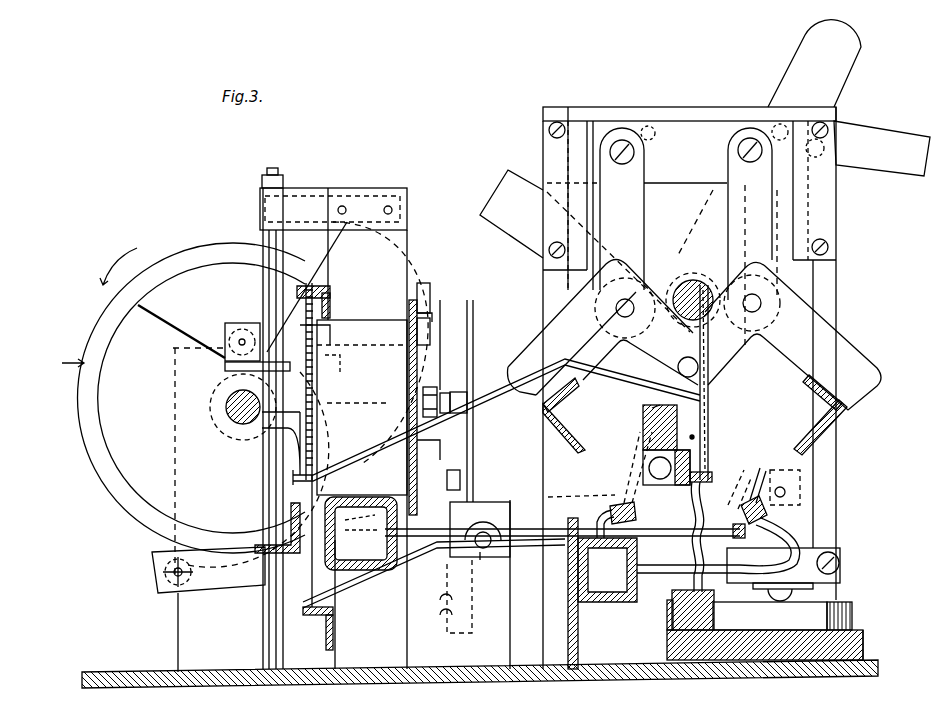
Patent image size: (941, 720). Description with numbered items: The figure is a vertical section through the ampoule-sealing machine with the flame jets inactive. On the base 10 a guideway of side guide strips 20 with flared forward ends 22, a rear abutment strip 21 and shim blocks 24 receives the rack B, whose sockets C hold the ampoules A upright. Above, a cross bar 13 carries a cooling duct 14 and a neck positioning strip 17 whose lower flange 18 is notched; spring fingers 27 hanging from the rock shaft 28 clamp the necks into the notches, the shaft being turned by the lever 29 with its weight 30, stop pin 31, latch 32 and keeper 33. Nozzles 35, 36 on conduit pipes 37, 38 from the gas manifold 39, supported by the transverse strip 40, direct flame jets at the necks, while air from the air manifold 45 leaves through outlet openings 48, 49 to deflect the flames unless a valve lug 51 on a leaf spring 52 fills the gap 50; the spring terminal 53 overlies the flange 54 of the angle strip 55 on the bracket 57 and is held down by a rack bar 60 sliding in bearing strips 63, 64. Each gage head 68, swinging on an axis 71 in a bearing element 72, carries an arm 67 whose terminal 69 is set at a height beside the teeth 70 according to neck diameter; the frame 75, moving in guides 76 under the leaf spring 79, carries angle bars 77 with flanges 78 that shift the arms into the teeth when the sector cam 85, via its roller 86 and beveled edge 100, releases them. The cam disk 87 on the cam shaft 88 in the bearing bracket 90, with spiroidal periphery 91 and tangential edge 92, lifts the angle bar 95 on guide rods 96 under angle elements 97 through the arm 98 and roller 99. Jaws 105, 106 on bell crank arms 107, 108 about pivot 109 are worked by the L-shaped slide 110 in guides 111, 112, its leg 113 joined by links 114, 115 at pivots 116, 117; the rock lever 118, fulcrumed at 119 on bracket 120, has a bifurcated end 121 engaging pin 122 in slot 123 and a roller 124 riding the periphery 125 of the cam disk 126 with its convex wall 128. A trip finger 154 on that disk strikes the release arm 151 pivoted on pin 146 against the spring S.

The base 10 is at (328, 677).
The cross bar 13 is at (645, 425).
The transverse duct 14 is at (643, 450).
The ampoule neck positioning strip 17 is at (703, 466).
The lower flange 18 is at (712, 478).
The side guide strips 20 is at (808, 616).
The rear abutment strip 21 is at (667, 634).
The forward ends of side guide strips 22 is at (852, 618).
The shim blocks 24 is at (862, 642).
The spring fingers 27 is at (710, 400).
The rock shaft 28 is at (688, 278).
The lever 29 is at (848, 62).
The weight 30 is at (506, 178).
The stop pin 31 is at (650, 127).
The latch 32 is at (870, 132).
The keeper 33 is at (825, 148).
The nozzle 35 is at (632, 510).
The nozzle 36 is at (760, 480).
The conduit pipe 37 is at (600, 520).
The conduit pipe 38 is at (795, 538).
The gas manifold 39 is at (609, 592).
The transverse strip 40 is at (567, 598).
The air manifold 45 is at (357, 570).
The outlet opening 48 is at (662, 533).
The outlet opening 49 is at (733, 537).
The space or gap 50 is at (361, 533).
The valve lug 51 is at (362, 537).
The leaf spring 52 is at (482, 555).
The horizontal terminal 53 is at (315, 606).
The upper horizontal flange 54 is at (313, 617).
The angle strip 55 is at (333, 632).
The upstanding bracket 57 is at (407, 233).
The rack bar 60 is at (322, 342).
The bearing strip 63 is at (312, 285).
The bearing strip 64 is at (330, 475).
The arm 67 is at (478, 395).
The gage head 68 is at (710, 416).
The terminal 69 is at (290, 440).
The teeth 70 is at (318, 452).
The horizontal axis 71 is at (693, 438).
The bearing element 72 is at (650, 410).
The frame 75 is at (430, 305).
The guides 76 is at (418, 287).
The angle bars 77 is at (407, 455).
The rearwardly directed flange 78 is at (312, 333).
The leaf spring 79 is at (430, 348).
The sector shaped cam 85 is at (432, 323).
The cam roller 86 is at (435, 385).
The cam disk 87 is at (100, 433).
The cam shaft 88 is at (228, 402).
The bearing bracket 90 is at (185, 628).
The spiroidal periphery 91 is at (115, 491).
The tangential edge 92 is at (173, 325).
The angle bar 95 is at (260, 556).
The guide rods 96 is at (270, 635).
The angle elements 97 is at (305, 200).
The upstanding arm 98 is at (330, 360).
The cam roller 99 is at (243, 325).
The beveled leading edge 100 is at (322, 252).
The jaw 105 is at (572, 440).
The jaw 106 is at (833, 437).
The bell crank lever arm 107 is at (565, 322).
The bell crank lever arm 108 is at (835, 343).
The pivot 109 is at (678, 367).
The L-shaped slide 110 is at (797, 278).
The upper guide 111 is at (548, 140).
The lower guide 112 is at (822, 550).
The upper horizontal leg 113 is at (705, 118).
The link 114 is at (645, 208).
The link 115 is at (727, 220).
The pivot 116 is at (620, 135).
The pivot 117 is at (627, 313).
The rock lever 118 is at (160, 593).
The fulcrum 119 is at (487, 520).
The bearing bracket 120 is at (490, 625).
The bifurcated terminal 121 is at (800, 472).
The pin 122 is at (788, 492).
The slot 123 is at (805, 598).
The cam roller 124 is at (160, 578).
The periphery 125 is at (58, 361).
The cam disk 126 is at (200, 250).
The convex following wall 128 is at (240, 524).
The pivot pin 146 is at (462, 470).
The latch release arm 151 is at (460, 447).
The trip finger 154 is at (462, 410).
The ampoules A is at (685, 550).
The rack B is at (714, 614).
The sockets C is at (673, 597).
The spring S is at (462, 500).